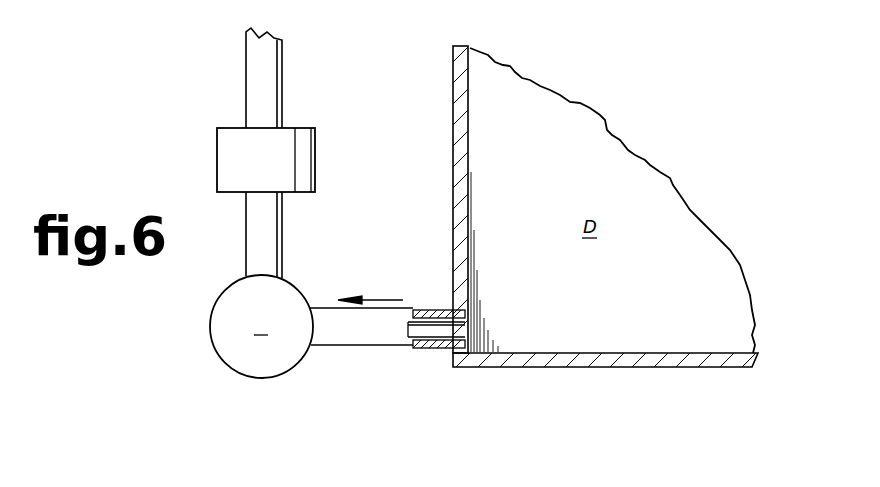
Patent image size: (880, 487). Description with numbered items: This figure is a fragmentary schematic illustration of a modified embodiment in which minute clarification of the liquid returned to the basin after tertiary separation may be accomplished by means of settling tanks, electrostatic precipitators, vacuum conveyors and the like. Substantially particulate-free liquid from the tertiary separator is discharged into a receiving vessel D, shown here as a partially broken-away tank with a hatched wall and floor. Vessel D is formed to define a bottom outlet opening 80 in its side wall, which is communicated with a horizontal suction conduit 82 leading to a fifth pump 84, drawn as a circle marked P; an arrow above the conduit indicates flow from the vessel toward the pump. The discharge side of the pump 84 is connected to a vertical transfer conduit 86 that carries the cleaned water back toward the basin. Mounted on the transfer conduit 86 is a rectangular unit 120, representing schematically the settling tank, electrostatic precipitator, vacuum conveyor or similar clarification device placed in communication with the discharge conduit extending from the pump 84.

The bottom outlet opening 80 is at (470, 330).
The suction conduit 82 is at (334, 346).
The fifth pump 84 is at (210, 335).
The transfer conduit 86 is at (246, 68).
The valve 120 is at (217, 166).